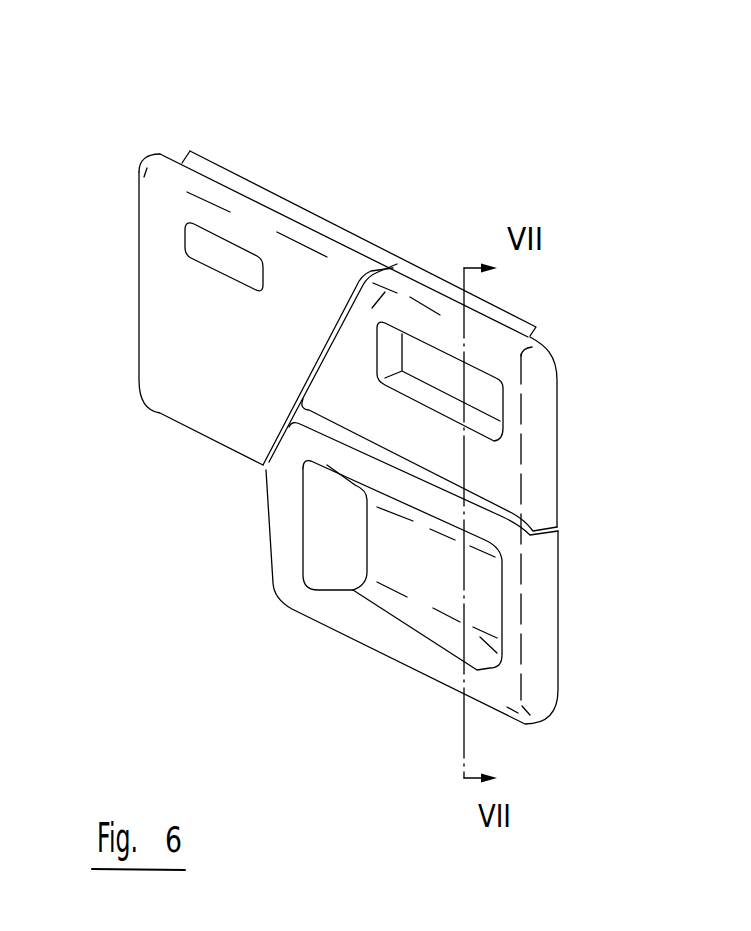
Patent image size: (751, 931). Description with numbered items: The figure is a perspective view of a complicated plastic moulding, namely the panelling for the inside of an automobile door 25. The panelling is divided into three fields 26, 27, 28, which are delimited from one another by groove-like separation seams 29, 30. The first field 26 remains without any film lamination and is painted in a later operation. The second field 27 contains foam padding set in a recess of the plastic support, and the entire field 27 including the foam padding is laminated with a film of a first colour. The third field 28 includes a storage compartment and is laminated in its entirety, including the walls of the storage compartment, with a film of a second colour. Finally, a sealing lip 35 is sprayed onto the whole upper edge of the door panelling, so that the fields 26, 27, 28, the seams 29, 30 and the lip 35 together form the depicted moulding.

The automobile door 25 is at (287, 264).
The field 26 is at (233, 390).
The field 27 is at (372, 308).
The field 28 is at (505, 655).
The separation seam 29 is at (341, 302).
The separation seam 30 is at (502, 498).
The sealing lip 35 is at (507, 310).